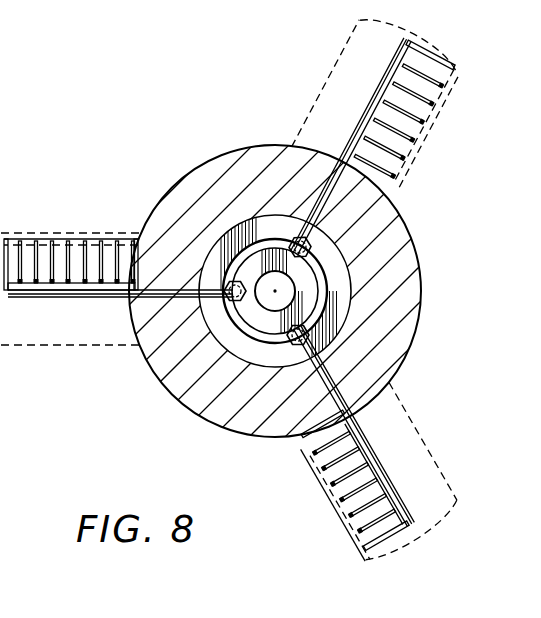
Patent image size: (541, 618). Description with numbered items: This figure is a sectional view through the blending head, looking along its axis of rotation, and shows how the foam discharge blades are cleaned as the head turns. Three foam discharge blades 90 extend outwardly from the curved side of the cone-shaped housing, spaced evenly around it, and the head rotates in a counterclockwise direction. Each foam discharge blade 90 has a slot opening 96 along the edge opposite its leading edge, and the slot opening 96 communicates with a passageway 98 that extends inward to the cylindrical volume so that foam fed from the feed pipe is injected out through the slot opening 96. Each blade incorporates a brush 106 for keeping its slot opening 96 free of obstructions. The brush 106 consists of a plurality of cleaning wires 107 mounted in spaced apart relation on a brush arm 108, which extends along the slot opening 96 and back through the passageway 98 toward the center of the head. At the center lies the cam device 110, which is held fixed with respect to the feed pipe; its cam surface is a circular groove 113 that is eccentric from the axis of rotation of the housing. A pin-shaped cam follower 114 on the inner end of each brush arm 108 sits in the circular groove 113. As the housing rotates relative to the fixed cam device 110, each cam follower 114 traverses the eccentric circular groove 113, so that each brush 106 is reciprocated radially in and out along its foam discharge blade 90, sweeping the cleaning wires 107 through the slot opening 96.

The foam discharge blade 90 is at (340, 99).
The slot opening 96 is at (14, 237).
The passageway 98 is at (171, 282).
The brush 106 is at (391, 538).
The cleaning wire 107 is at (303, 452).
The brush arm 108 is at (377, 479).
The cam device 110 is at (235, 340).
The circular groove 113 is at (334, 290).
The cam follower 114 is at (296, 341).